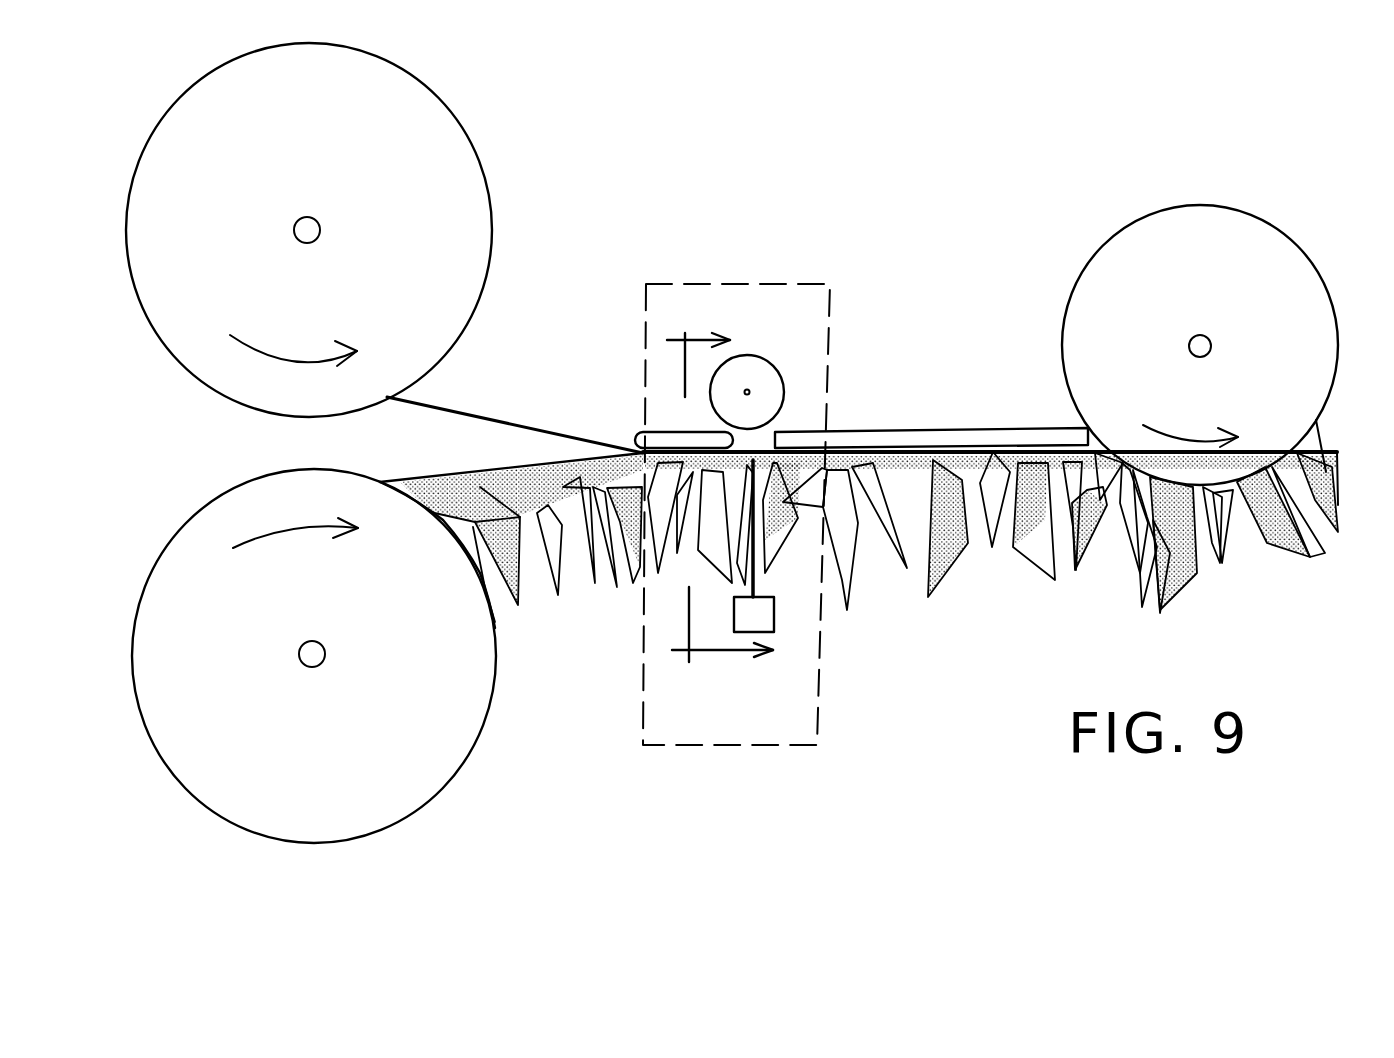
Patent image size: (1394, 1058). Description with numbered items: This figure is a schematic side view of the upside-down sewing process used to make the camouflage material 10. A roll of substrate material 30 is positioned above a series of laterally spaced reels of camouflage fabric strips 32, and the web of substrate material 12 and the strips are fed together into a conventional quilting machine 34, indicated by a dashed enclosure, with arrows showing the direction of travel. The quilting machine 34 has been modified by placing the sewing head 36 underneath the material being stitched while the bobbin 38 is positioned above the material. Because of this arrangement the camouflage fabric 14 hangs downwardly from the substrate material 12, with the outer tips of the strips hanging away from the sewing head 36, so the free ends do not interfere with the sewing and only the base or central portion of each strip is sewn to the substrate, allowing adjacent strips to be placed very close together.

The camouflage material 10 is at (729, 496).
The substrate material 12 is at (473, 415).
The camouflage fabric 14 is at (458, 473).
The roll of substrate material 30 is at (455, 188).
The reels of camouflage fabric strips 32 is at (377, 803).
The quilting machine 34 is at (823, 283).
The sewing head 36 is at (774, 612).
The bobbin 38 is at (777, 396).